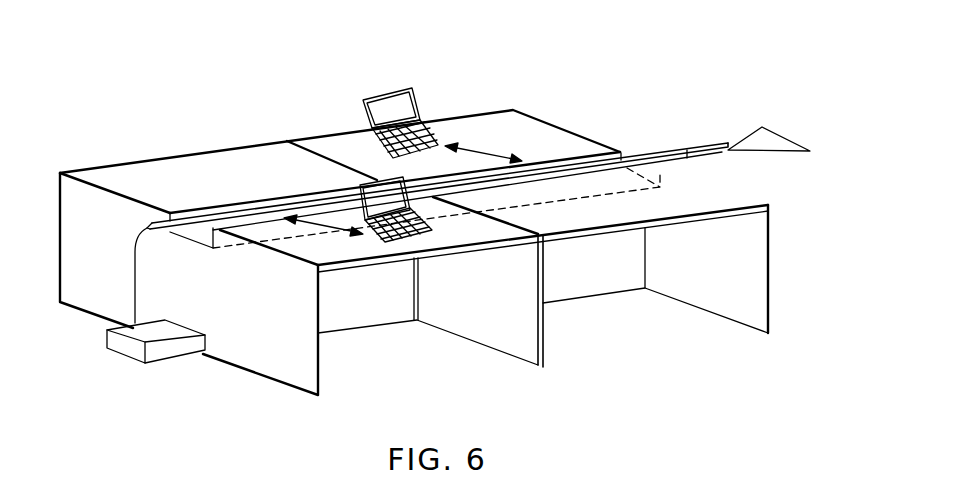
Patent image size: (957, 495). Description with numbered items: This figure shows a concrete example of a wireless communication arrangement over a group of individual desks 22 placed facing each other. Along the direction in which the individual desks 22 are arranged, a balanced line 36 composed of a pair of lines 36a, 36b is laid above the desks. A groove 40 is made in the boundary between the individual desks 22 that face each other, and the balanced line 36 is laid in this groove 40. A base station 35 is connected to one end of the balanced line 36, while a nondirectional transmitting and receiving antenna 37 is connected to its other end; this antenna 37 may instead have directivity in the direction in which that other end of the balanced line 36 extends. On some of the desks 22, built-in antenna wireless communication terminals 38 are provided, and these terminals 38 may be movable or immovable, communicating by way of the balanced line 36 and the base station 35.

The individual desk 22 is at (349, 272).
The base station 35 is at (123, 344).
The balanced line 36 is at (459, 159).
The line 36a is at (706, 141).
The line 36b is at (712, 152).
The nondirectional transmitting and receiving antenna 37 is at (780, 136).
The built-in antenna wireless communication terminal 38 is at (386, 88).
The groove 40 is at (193, 212).